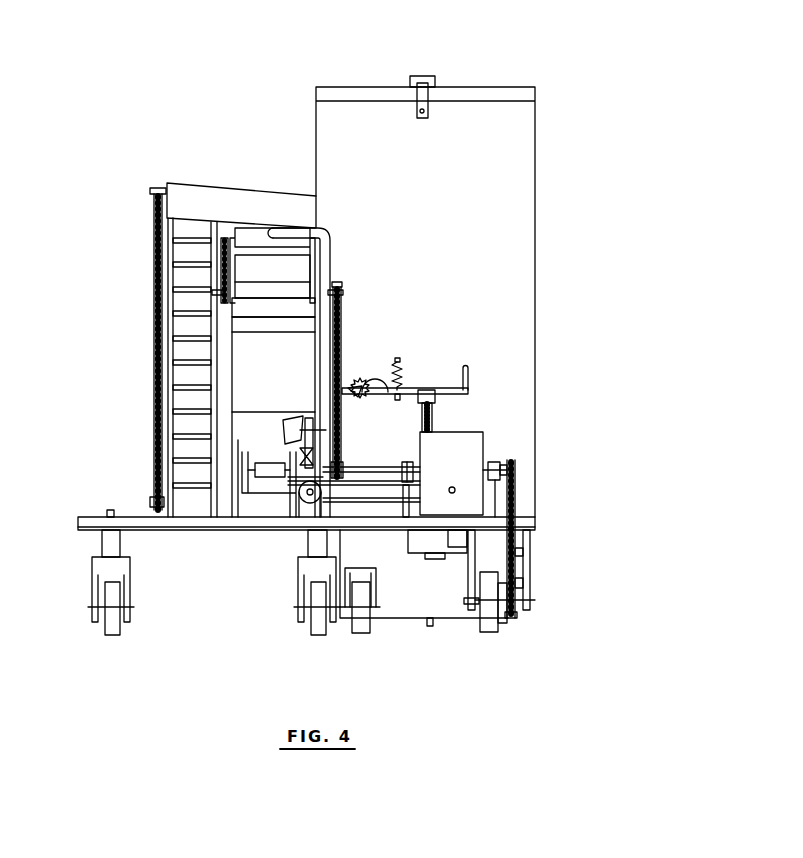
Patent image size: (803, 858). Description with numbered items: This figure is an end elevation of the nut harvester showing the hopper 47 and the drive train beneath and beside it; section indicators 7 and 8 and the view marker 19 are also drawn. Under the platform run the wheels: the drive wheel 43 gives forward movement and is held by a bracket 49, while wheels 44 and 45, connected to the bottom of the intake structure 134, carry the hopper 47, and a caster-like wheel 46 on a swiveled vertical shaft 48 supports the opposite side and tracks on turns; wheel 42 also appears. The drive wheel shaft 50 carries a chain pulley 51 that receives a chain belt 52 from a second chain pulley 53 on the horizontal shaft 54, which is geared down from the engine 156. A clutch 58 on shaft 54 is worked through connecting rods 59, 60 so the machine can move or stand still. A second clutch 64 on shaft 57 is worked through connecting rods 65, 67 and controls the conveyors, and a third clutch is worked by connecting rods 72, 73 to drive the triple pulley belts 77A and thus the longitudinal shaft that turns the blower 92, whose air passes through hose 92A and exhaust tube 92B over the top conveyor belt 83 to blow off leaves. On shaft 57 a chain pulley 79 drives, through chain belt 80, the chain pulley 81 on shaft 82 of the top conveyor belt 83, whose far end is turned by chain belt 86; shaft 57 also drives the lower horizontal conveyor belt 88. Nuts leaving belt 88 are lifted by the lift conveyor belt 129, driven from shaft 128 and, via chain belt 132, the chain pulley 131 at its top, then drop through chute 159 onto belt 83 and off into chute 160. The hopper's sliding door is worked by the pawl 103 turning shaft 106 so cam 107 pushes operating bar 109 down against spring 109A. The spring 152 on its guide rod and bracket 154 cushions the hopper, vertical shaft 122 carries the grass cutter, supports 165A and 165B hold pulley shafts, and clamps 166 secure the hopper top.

The section line 7- 7 is at (456, 115).
The section line 8- 8 is at (333, 138).
The direction arrow 19 is at (265, 442).
The caster wheel 42 is at (315, 635).
The drive wheel 43 is at (490, 632).
The wheel 44 is at (363, 633).
The wheel 45 is at (504, 630).
The wheel 46 is at (108, 635).
The hopper 47 is at (522, 402).
The swiveled vertical shaft 48 is at (107, 513).
The bracket 49 is at (530, 546).
The shaft 50 is at (466, 602).
The chain pulley 51 is at (518, 616).
The chain belt 52 is at (523, 583).
The chain pulley 53 is at (516, 477).
The horizontal shaft 54 is at (510, 466).
The shaft 57 is at (238, 472).
The clutch 58 is at (495, 460).
The connecting rod 59 is at (497, 494).
The connecting rod 60 is at (523, 553).
The clutch 64 is at (407, 462).
The connecting rod 65 is at (397, 513).
The connecting rod 67 is at (433, 559).
The connecting rod 72 is at (447, 533).
The connecting rod 73 is at (458, 546).
The triple pulley belts 77A is at (370, 486).
The chain pulley 79 is at (343, 465).
The chain belt 80 is at (343, 312).
The chain pulley 81 is at (341, 283).
The shaft 82 is at (214, 292).
The top conveyor belt 83 is at (265, 278).
The chain belt 86 is at (221, 275).
The lower horizontal conveyor belt 88 is at (269, 481).
The blower 92 is at (307, 503).
The hose 92A is at (328, 245).
The exhaust tube 92B is at (253, 240).
The pawl 103 is at (347, 383).
The shaft 106 is at (356, 392).
The cam 107 is at (373, 380).
The operating bar 109 is at (410, 387).
The spring 109A is at (402, 374).
The vertical shaft 122 is at (427, 624).
The shaft 128 is at (150, 503).
The lift conveyor belt 129 is at (197, 503).
The chain pulley 131 is at (150, 191).
The chain belt 132 is at (154, 385).
The intake structure 134 is at (455, 618).
The spring 152 is at (433, 424).
The bracket 154 is at (436, 396).
The engine 156 is at (477, 447).
The chute 159 is at (202, 195).
The chute 160 is at (280, 398).
The support 165A is at (296, 420).
The support 165B is at (288, 471).
The clamps 166 is at (417, 110).